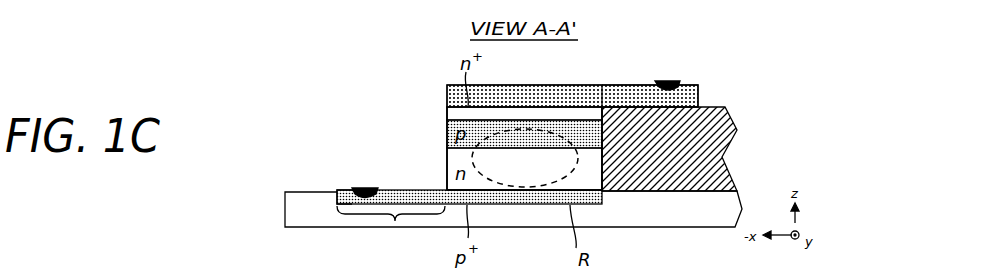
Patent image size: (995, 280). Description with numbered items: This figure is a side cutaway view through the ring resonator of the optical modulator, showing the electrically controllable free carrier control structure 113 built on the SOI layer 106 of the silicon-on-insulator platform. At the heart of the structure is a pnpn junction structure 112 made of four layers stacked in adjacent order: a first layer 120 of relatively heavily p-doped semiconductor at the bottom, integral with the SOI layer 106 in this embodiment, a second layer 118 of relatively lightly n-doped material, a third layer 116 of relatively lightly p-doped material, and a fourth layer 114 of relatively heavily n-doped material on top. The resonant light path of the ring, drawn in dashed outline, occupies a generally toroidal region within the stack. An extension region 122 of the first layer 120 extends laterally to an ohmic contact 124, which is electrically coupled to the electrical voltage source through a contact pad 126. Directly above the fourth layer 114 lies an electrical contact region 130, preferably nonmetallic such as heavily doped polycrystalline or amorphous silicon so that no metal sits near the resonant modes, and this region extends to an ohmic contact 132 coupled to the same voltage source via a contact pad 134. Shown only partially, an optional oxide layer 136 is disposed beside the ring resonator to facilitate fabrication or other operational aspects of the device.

The SOI layer 106 is at (286, 210).
The pnpn junction structure 112 is at (367, 178).
The free carrier control structure 113 is at (319, 64).
The fourth layer 114 is at (447, 113).
The third layer 116 is at (447, 138).
The second layer 118 is at (447, 170).
The first layer 120 is at (447, 197).
The extension region 122 is at (395, 222).
The ohmic contact 124 is at (340, 199).
The contact pad 126 is at (353, 189).
The electrical contact region 130 is at (447, 92).
The ohmic contact 132 is at (700, 97).
The contact pad 134 is at (667, 82).
The oxide layer 136 is at (722, 146).